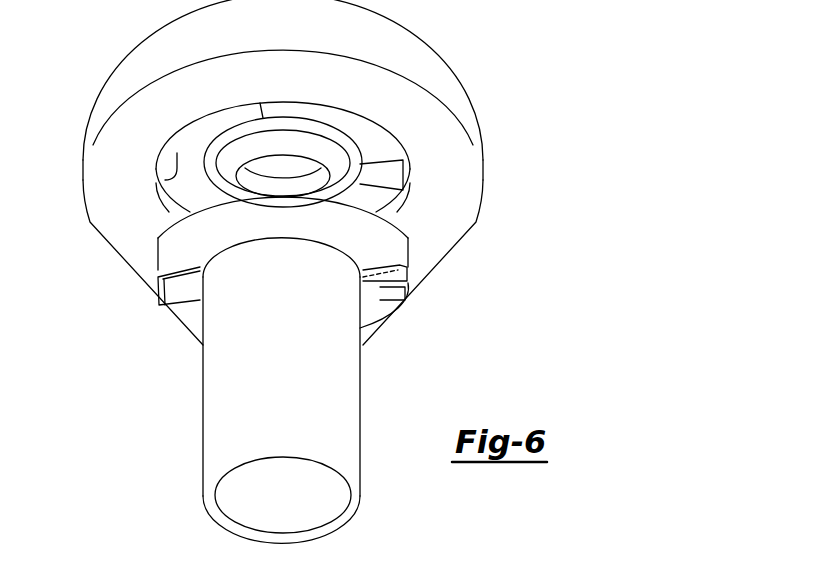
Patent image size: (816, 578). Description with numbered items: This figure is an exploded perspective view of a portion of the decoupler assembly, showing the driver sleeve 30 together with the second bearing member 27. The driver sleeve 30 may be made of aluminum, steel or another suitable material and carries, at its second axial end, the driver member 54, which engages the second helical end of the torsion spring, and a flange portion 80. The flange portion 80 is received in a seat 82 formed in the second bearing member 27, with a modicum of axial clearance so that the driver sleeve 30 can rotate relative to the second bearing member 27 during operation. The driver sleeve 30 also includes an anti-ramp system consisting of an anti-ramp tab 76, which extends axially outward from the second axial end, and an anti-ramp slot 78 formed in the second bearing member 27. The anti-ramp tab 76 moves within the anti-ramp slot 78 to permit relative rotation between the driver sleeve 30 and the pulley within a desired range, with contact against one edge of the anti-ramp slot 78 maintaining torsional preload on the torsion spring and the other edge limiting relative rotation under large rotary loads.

The second bearing member 27 is at (413, 44).
The seat 82 is at (165, 174).
The anti-ramp slot 78 is at (380, 147).
The flange portion 80 is at (383, 320).
The driver member 54 is at (155, 297).
The anti-ramp tab 76 is at (373, 293).
The driver sleeve 30 is at (212, 405).